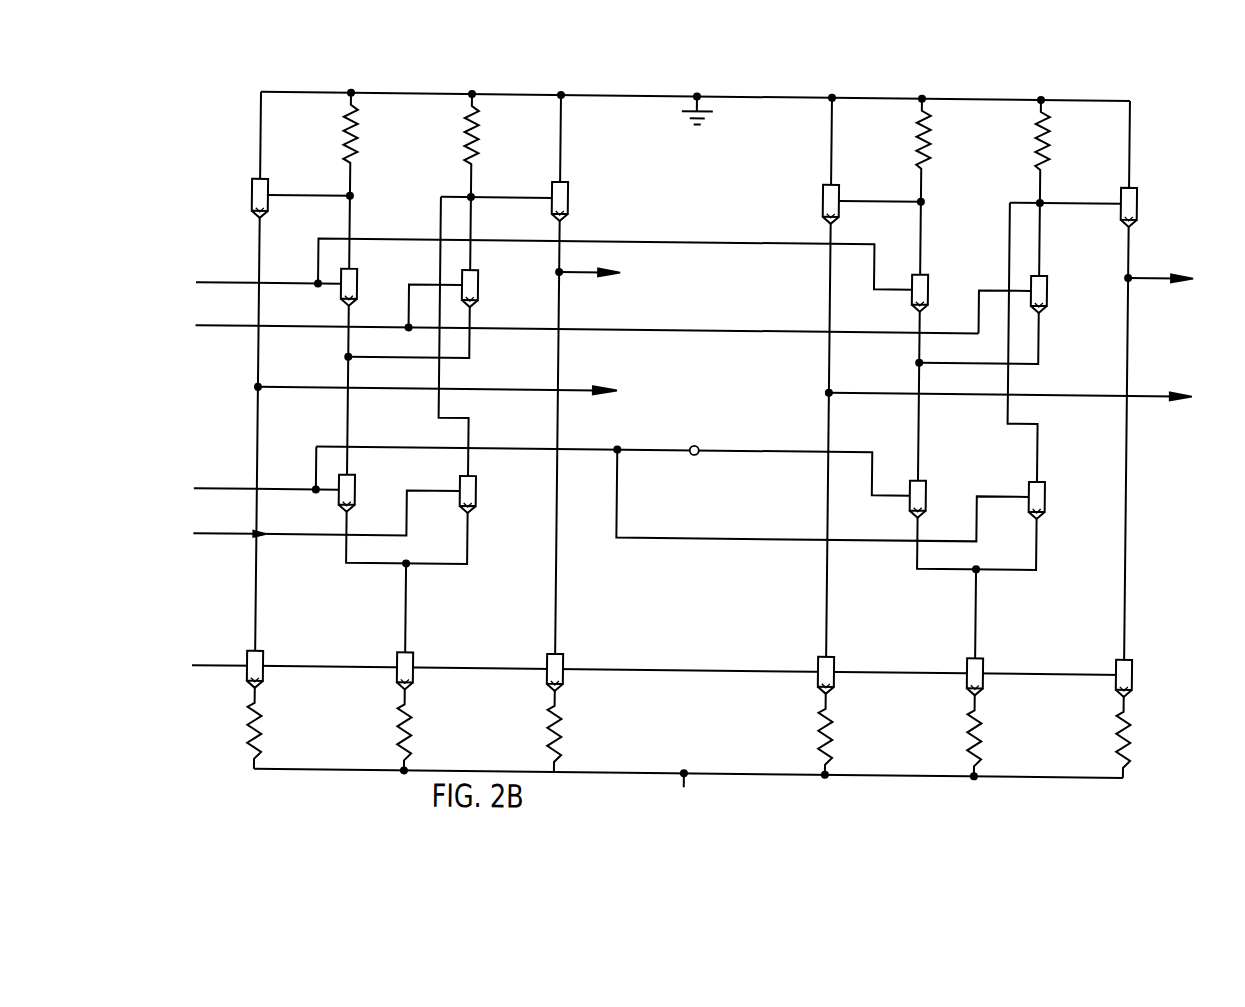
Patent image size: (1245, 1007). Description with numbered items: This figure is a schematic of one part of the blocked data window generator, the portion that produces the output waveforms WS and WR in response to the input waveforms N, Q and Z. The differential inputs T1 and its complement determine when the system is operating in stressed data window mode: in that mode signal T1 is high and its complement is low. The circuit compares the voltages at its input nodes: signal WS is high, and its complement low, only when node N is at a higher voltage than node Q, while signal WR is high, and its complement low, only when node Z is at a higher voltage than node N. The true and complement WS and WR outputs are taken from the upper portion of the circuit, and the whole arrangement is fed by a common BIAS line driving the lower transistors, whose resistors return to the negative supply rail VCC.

The differential input signal T1 is at (599, 295).
The node N is at (253, 474).
The node Q is at (313, 518).
The node Z is at (672, 477).
The signal WS is at (452, 330).
The signal WR is at (1026, 337).
The bias line BIAS is at (636, 670).
The negative supply rail - VCC is at (687, 794).